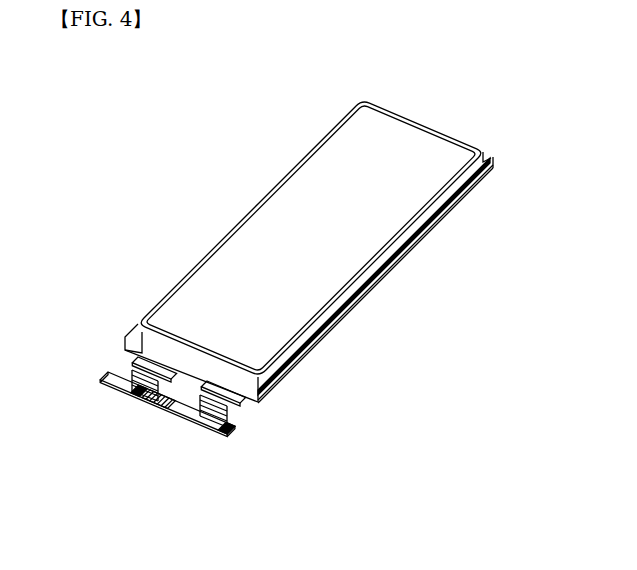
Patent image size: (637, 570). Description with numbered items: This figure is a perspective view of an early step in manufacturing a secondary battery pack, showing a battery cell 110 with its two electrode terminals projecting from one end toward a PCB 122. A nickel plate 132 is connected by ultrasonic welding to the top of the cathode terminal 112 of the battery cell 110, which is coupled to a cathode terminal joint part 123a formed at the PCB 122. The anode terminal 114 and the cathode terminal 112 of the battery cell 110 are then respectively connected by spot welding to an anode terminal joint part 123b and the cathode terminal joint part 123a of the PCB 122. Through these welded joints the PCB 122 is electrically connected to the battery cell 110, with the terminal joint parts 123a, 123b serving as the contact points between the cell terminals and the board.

The battery cell 110 is at (414, 264).
The cathode terminal 112 is at (233, 408).
The anode terminal 114 is at (119, 373).
The PCB 122 is at (223, 430).
The cathode terminal joint part 123a is at (195, 419).
The anode terminal joint part 123b is at (130, 388).
The nickel plate 132 is at (240, 420).